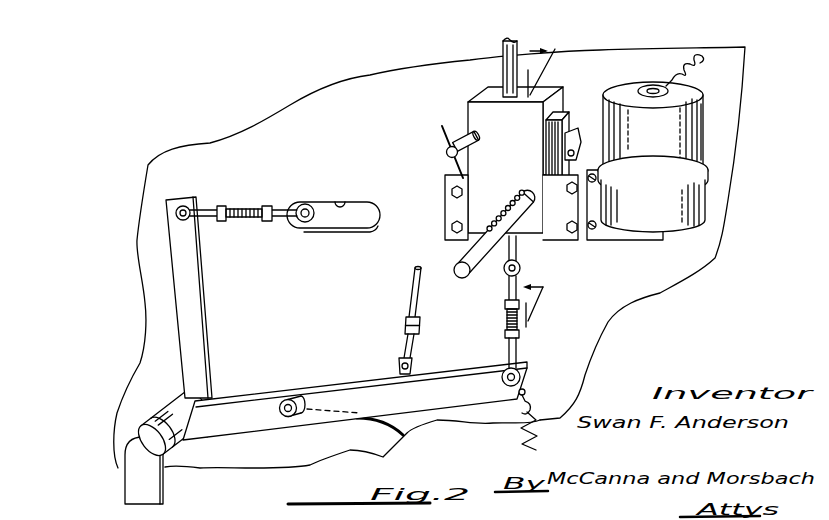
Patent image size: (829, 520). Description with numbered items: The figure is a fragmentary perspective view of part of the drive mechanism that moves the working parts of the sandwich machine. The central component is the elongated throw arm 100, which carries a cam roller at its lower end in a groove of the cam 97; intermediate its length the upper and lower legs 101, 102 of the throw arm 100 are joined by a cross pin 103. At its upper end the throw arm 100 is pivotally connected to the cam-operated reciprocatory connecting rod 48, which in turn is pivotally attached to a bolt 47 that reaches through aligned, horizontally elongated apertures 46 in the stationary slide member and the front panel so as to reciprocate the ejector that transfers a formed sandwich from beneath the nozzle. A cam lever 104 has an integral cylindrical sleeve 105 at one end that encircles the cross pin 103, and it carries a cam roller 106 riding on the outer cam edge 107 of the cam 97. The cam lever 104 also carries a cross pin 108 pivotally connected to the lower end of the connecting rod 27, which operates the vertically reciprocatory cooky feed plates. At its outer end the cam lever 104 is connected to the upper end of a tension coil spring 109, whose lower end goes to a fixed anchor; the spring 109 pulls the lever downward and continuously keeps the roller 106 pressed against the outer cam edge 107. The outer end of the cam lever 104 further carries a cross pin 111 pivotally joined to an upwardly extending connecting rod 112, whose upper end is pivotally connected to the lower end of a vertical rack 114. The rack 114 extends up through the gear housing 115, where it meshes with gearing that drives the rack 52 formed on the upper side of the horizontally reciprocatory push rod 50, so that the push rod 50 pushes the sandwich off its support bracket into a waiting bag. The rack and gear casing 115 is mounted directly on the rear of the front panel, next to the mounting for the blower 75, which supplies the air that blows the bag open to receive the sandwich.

The throw arm 100 is at (118, 468).
The cam 97 is at (267, 457).
The upper leg 101 is at (188, 296).
The lower leg 102 is at (143, 480).
The cross pin 103 is at (215, 398).
The cam lever 104 is at (271, 399).
The cylindrical sleeve 105 is at (163, 420).
The cam roller 106 is at (322, 388).
The outer cam edge 107 is at (233, 437).
The cross pin 108 is at (398, 370).
The tension coil spring 109 is at (520, 428).
The cross pin 111 is at (522, 368).
The connecting rod 112 is at (520, 327).
The vertical rack 114 is at (504, 272).
The gear housing 115 is at (517, 120).
The connecting rod 27 is at (417, 305).
The horizontally elongated apertures 46 is at (357, 202).
The bolt 47 is at (311, 206).
The connecting rod 48 is at (273, 210).
The push rod 50 is at (479, 224).
The rack 52 is at (498, 227).
The blower 75 is at (680, 138).